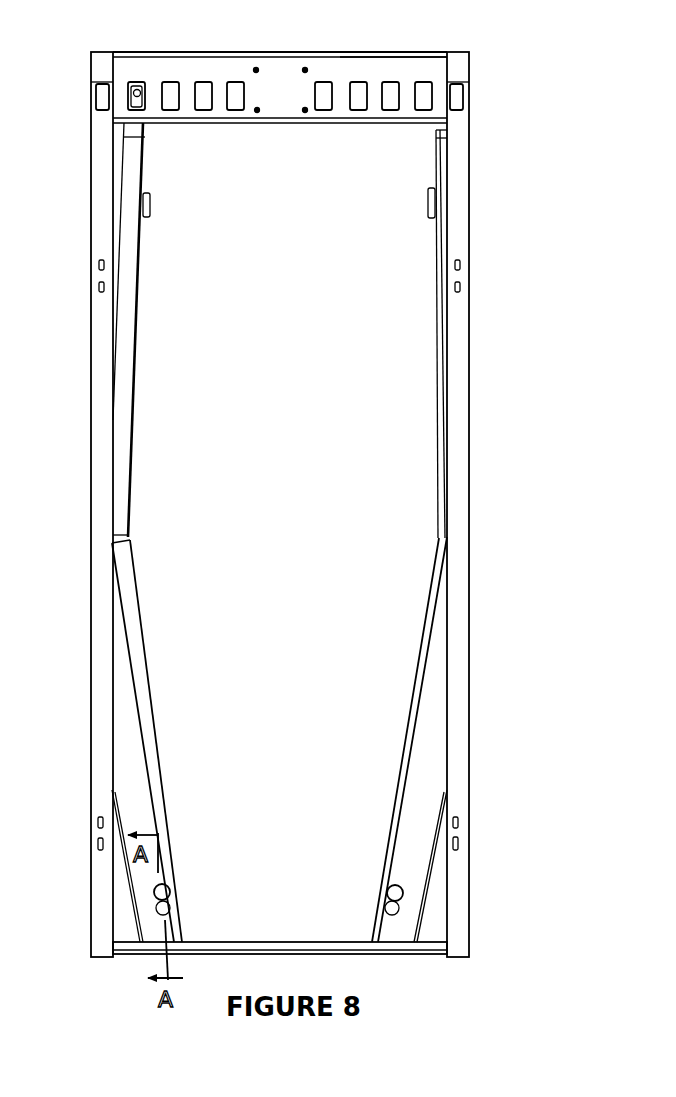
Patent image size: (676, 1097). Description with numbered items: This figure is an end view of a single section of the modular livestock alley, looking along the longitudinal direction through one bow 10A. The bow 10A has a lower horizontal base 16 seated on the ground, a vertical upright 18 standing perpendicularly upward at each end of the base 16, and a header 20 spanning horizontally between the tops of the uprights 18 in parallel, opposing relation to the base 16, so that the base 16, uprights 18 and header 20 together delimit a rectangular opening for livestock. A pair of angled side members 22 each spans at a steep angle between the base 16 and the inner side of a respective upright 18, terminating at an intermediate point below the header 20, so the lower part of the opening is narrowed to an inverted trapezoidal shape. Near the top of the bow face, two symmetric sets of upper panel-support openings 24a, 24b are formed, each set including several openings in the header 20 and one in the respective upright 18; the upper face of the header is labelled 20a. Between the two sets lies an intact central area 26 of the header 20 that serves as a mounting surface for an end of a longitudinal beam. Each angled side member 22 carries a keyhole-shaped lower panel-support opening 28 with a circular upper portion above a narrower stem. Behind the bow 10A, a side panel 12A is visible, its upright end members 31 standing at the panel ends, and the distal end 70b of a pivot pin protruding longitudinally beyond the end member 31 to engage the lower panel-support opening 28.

The bow 10A is at (304, 482).
The side panel 12A is at (280, 330).
The lower horizontal base 16 is at (292, 950).
The vertical upright 18 is at (463, 503).
The header 20 is at (279, 105).
The top rail face 20a is at (378, 63).
The angled side member 22 is at (142, 805).
The upper panel-support openings 24a is at (235, 95).
The upper panel-support openings 24b is at (452, 102).
The central area 26 is at (282, 107).
The lower panel-support opening 28 is at (168, 893).
The upright end member 31 is at (131, 265).
The distal end of pivot pin 70b is at (173, 907).